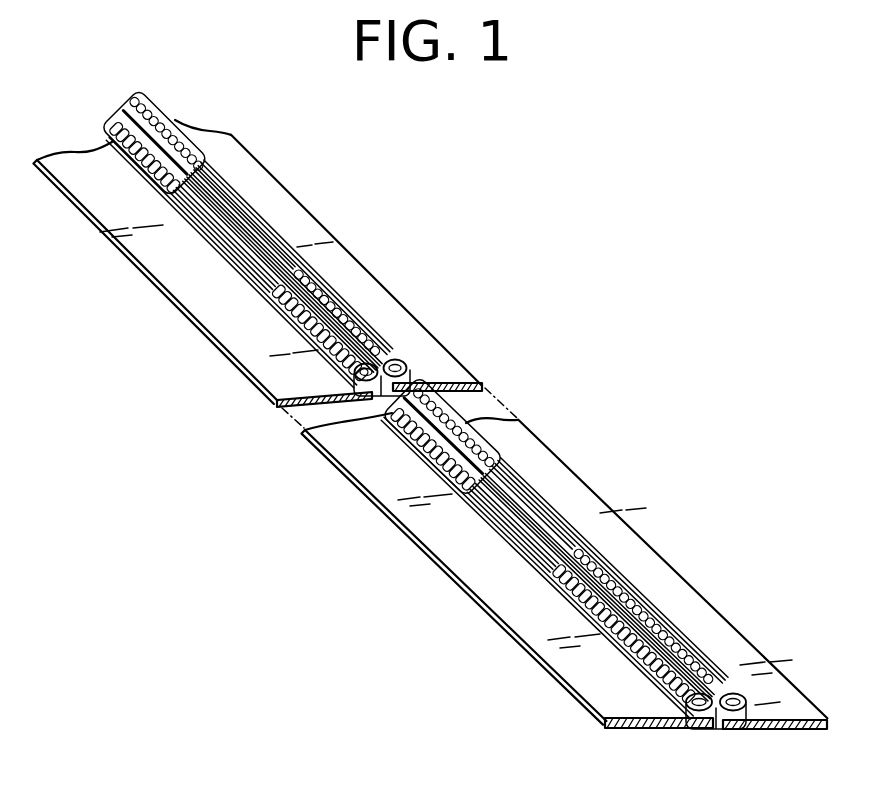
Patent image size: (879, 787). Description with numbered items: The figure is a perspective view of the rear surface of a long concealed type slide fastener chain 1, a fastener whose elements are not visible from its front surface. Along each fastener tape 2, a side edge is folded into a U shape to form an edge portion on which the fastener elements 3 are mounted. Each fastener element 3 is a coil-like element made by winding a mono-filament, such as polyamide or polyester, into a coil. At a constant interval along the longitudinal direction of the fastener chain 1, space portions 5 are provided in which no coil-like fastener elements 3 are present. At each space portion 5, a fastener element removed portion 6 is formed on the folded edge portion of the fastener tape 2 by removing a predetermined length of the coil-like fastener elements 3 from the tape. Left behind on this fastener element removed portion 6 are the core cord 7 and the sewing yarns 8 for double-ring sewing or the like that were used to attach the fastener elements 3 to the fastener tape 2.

The fastener chain 1 is at (430, 322).
The fastener tape 2 is at (262, 203).
The coil-like fastener element 3 is at (548, 658).
The space portion 5 is at (270, 235).
The fastener element removed portion 6 is at (237, 270).
The core cord 7 is at (410, 358).
The sewing yarn 8 is at (308, 332).